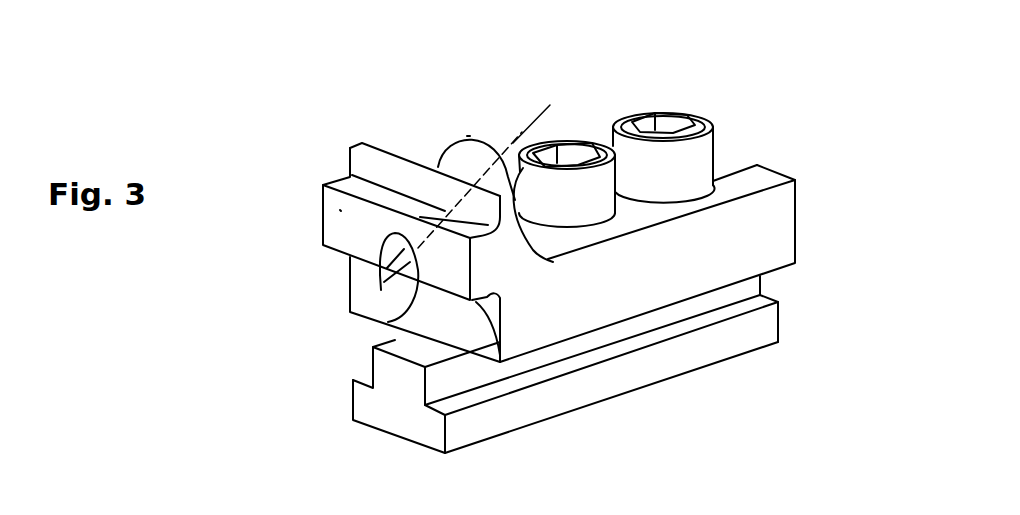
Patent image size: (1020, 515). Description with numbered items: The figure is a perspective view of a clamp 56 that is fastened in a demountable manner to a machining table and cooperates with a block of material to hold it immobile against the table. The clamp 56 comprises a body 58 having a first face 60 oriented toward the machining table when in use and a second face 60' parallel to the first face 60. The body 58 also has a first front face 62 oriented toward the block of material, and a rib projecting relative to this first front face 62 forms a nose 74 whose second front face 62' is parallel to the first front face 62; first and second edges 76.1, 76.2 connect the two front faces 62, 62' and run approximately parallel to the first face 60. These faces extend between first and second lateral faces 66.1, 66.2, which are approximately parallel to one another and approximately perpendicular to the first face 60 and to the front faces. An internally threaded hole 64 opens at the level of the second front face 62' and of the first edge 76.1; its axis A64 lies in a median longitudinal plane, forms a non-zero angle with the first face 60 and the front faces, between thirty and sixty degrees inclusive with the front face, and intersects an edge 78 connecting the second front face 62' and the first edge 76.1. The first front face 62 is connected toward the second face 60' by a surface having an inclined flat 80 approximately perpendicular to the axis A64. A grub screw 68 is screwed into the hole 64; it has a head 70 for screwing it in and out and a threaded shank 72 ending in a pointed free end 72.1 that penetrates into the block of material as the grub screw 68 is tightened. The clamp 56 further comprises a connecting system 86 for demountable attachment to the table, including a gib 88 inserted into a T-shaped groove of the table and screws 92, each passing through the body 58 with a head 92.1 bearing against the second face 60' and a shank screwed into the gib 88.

The clamp 56 is at (275, 172).
The body 58 is at (805, 246).
The first face 60 is at (625, 364).
The second face 60' is at (674, 192).
The first front face 62 is at (389, 261).
The second front face 62' is at (290, 204).
The internally threaded hole 64 is at (350, 278).
The first lateral face 66.1 is at (680, 277).
The second lateral face 66.2 is at (347, 272).
The grub screw 68 is at (477, 139).
The head 70 is at (450, 150).
The threaded shank 72 is at (390, 308).
The pointed free end 72.1 is at (357, 300).
The nose 74 is at (378, 184).
The first edge 76.1 is at (547, 367).
The second edge 76.2 is at (328, 186).
The edge 78 is at (448, 292).
The inclined flat 80 is at (542, 138).
The connecting system 86 is at (807, 320).
The gib 88 is at (657, 360).
The screw 92 is at (584, 140).
The head 92.1 is at (647, 112).
The axis A64 is at (517, 136).